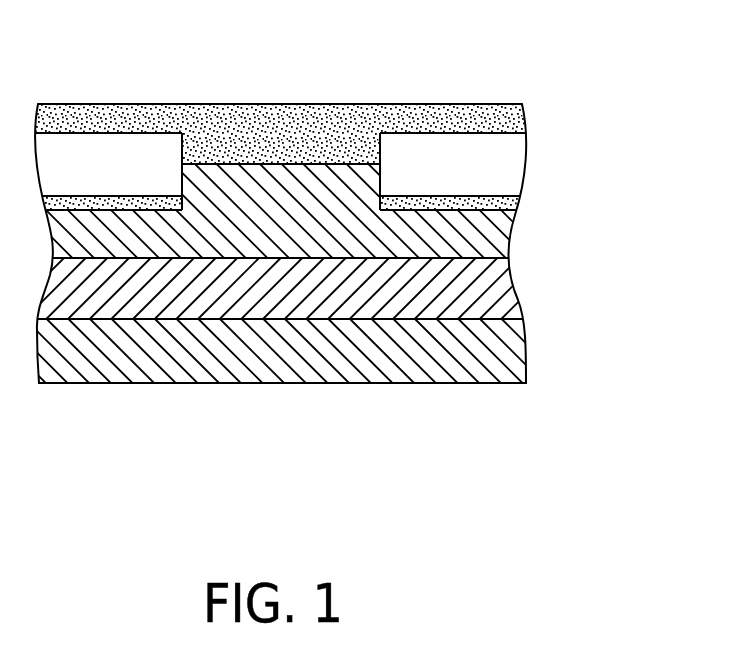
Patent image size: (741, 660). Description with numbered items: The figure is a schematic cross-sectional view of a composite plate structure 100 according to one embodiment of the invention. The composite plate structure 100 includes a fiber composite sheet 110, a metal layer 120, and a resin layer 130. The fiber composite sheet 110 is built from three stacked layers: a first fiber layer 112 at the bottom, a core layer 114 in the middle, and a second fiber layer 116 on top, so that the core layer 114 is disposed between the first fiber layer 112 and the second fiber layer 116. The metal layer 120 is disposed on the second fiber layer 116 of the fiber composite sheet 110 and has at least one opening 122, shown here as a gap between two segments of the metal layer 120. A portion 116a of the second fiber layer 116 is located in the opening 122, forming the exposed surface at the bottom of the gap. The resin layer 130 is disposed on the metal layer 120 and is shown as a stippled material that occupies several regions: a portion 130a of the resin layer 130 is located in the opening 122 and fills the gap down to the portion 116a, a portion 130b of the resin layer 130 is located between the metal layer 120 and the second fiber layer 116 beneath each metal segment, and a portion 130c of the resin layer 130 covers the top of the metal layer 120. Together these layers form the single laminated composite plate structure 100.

The composite plate structure 100 is at (575, 489).
The fiber composite sheet 110 is at (341, 273).
The first fiber layer 112 is at (306, 351).
The core layer 114 is at (493, 288).
The second fiber layer 116 is at (490, 233).
The portion of the second fiber layer 116a is at (287, 183).
The metal layer 120 is at (505, 170).
The opening 122 is at (380, 180).
The resin layer 130 is at (361, 123).
The portion of the resin layer 130a is at (267, 147).
The portion of the resin layer 130b is at (502, 204).
The portion of the resin layer 130c is at (150, 120).